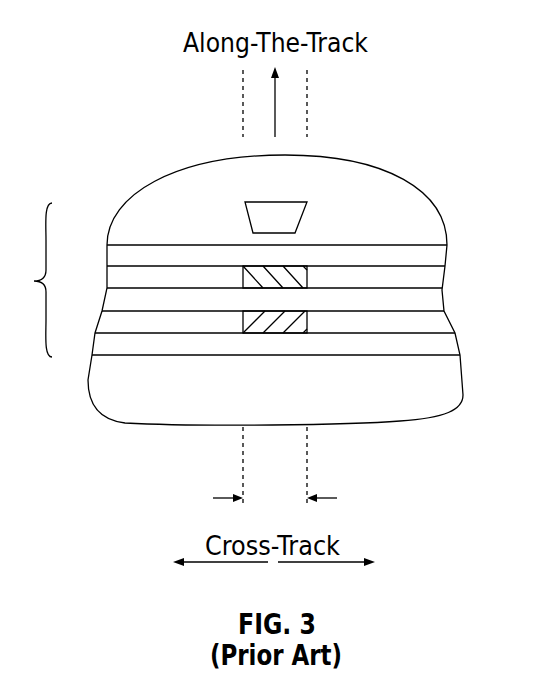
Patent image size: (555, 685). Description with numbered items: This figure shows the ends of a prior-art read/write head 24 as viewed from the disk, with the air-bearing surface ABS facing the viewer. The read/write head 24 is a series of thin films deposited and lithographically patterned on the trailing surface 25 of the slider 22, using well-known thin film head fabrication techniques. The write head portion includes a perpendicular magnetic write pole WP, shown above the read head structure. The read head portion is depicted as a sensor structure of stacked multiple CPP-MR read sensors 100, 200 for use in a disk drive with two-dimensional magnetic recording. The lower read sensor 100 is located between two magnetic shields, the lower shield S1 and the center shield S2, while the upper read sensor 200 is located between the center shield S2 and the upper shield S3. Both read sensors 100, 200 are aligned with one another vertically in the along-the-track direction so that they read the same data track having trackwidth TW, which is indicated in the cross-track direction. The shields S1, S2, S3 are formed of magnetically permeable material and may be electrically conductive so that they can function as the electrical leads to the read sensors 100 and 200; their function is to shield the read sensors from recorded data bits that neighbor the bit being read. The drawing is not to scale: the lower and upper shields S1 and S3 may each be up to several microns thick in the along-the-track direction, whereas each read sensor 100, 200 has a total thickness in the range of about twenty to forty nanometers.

The slider 22 is at (122, 413).
The read/write head 24 is at (28, 280).
The trailing surface 25 is at (130, 357).
The lower read sensor 100 is at (297, 322).
The upper read sensor 200 is at (255, 272).
The lower shield S1 is at (446, 345).
The center shield S2 is at (436, 300).
The upper shield S3 is at (434, 254).
The perpendicular magnetic write pole WP is at (306, 219).
The air bearing surface ABS is at (163, 189).
The trackwidth TW is at (254, 292).